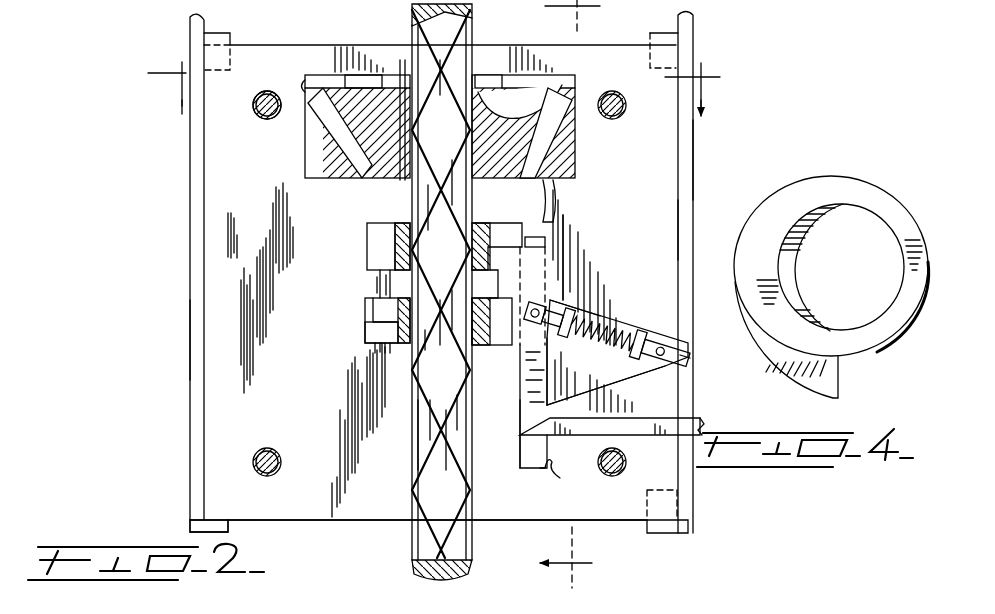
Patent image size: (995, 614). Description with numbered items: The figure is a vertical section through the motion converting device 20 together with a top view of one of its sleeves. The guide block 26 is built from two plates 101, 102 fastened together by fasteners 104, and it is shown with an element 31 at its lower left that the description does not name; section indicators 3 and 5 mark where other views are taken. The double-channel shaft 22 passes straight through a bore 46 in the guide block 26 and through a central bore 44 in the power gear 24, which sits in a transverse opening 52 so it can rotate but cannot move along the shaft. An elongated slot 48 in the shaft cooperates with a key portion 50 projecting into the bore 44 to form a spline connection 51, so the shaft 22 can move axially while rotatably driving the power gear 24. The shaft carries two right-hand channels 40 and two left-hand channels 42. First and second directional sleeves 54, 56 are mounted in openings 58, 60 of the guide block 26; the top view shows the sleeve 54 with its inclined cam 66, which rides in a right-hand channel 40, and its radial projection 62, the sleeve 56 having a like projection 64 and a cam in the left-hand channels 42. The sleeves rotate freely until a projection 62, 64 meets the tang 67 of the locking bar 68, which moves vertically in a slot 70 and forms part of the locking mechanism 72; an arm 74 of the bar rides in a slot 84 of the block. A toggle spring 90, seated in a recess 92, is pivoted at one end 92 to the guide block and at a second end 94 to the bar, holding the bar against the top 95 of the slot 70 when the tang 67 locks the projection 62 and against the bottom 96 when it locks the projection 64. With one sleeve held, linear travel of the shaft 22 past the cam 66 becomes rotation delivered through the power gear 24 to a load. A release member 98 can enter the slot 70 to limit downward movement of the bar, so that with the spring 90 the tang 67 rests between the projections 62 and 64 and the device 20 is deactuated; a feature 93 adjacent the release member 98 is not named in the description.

In FIG. 2, the section line 3- 3 is at (434, 78).
In FIG. 2, the section line 5- 5 is at (576, 294).
In FIG. 2, the motion converting device 20 is at (377, 526).
In FIG. 2, the double-channel shaft 22 is at (446, 25).
In FIG. 2, the power gear 24 is at (347, 93).
In FIG. 2, the guide block 26 is at (682, 231).
In FIG. 2, the mounting flange 31 is at (198, 520).
In FIG. 2, the right-hand channels 40 is at (508, 93).
In FIG. 2, the left-hand channels 42 is at (408, 75).
In FIG. 2, the central bore 44 is at (540, 93).
In FIG. 2, the bore 46 is at (470, 462).
In FIG. 2, the elongated slot 48 is at (404, 455).
In FIG. 2, the key portion 50 is at (353, 145).
In FIG. 2, the spline connection 51 is at (362, 140).
In FIG. 2, the transverse opening 52 is at (308, 86).
In FIG. 2, the first directional sleeve 54 is at (402, 245).
In FIG. 4, the first directional sleeve 54 is at (878, 193).
In FIG. 2, the second directional sleeve 56 is at (400, 347).
In FIG. 2, the opening 58 is at (367, 243).
In FIG. 2, the opening 60 is at (372, 328).
In FIG. 2, the radial projection 62 is at (495, 230).
In FIG. 4, the radial projection 62 is at (838, 383).
In FIG. 2, the projection 64 is at (370, 310).
In FIG. 4, the cam 66 is at (800, 262).
In FIG. 2, the tang 67 is at (493, 321).
In FIG. 2, the locking bar 68 is at (540, 378).
In FIG. 2, the slot 70 is at (528, 412).
In FIG. 2, the locking mechanism 72 is at (590, 270).
In FIG. 2, the arm 74 is at (530, 237).
In FIG. 2, the slot 84 is at (519, 410).
In FIG. 2, the toggle spring 90 is at (598, 328).
In FIG. 2, the recess 92 is at (666, 352).
In FIG. 2, the edge 93 is at (597, 384).
In FIG. 2, the second end 94 is at (548, 300).
In FIG. 2, the top 95 is at (546, 134).
In FIG. 2, the bottom 96 is at (548, 472).
In FIG. 2, the release member 98 is at (678, 410).
In FIG. 2, the plate 101 is at (218, 343).
In FIG. 2, the plate 102 is at (696, 162).
In FIG. 2, the fasteners 104 is at (263, 112).